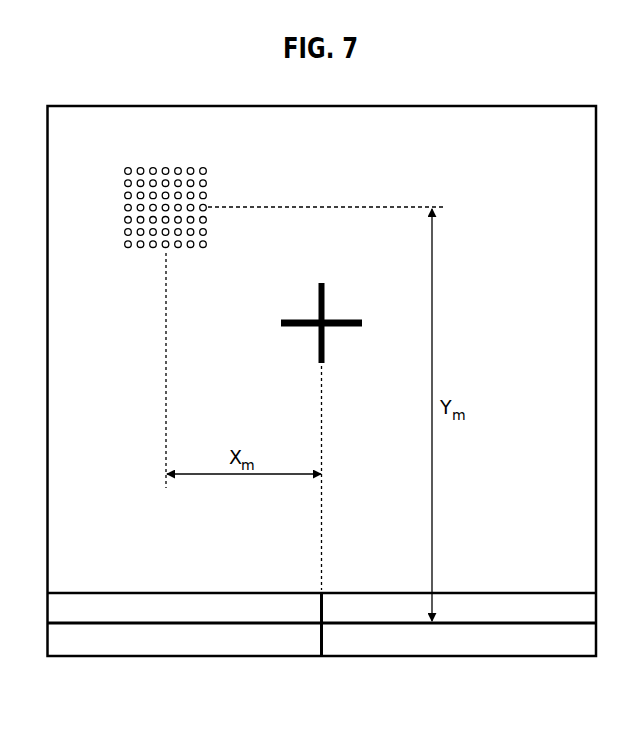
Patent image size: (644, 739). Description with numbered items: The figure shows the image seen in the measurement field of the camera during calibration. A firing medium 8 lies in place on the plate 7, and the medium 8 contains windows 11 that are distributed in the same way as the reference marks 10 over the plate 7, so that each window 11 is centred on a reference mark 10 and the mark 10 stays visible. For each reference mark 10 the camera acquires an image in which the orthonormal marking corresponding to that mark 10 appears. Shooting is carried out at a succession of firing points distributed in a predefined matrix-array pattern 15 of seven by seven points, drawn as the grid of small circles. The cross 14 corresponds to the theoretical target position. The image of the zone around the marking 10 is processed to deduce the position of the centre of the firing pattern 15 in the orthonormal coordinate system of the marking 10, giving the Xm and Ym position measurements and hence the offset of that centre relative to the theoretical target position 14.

The plate 7 is at (557, 640).
The firing medium 8 is at (557, 473).
The reference mark 10 is at (263, 627).
The window 11 is at (176, 656).
The cross 14 is at (328, 304).
The matrix-array firing pattern 15 is at (210, 189).